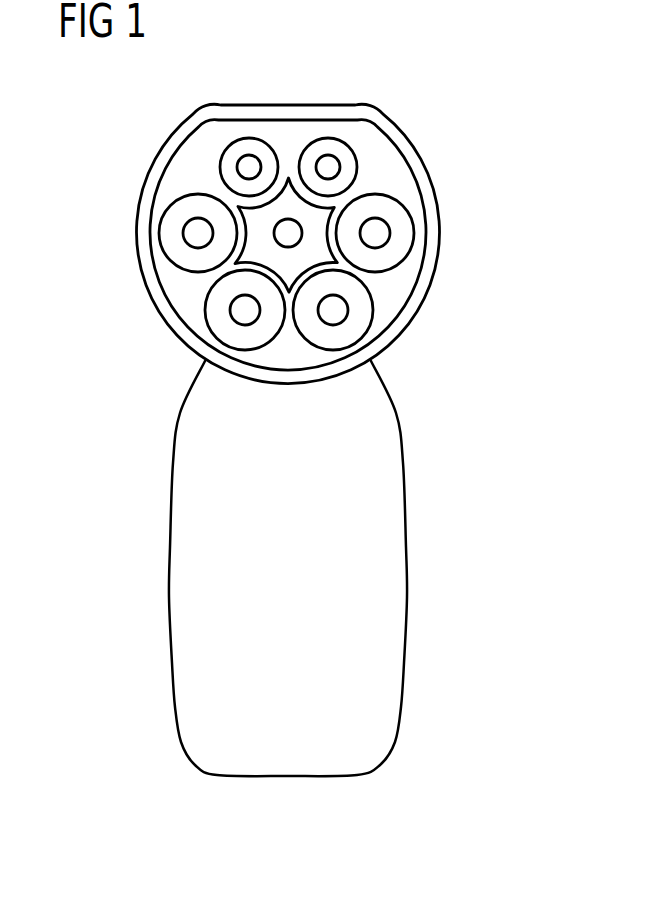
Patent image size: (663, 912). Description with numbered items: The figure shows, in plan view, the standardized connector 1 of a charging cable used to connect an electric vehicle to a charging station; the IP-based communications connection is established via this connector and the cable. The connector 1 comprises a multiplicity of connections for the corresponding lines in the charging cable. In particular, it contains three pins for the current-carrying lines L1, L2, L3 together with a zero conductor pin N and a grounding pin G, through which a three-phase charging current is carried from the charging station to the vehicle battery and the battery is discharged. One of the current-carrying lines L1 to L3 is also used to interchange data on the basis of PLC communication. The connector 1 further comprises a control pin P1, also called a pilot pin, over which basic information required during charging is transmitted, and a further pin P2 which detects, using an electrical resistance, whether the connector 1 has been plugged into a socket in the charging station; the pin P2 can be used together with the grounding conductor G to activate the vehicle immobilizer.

The connector 1 is at (466, 562).
The control pin P1 is at (328, 167).
The further pin P2 is at (249, 167).
The grounding pin G is at (288, 233).
The zero conductor pin N is at (375, 233).
The current-carrying line L1 is at (198, 234).
The current-carrying line L2 is at (245, 310).
The current-carrying line L3 is at (333, 310).